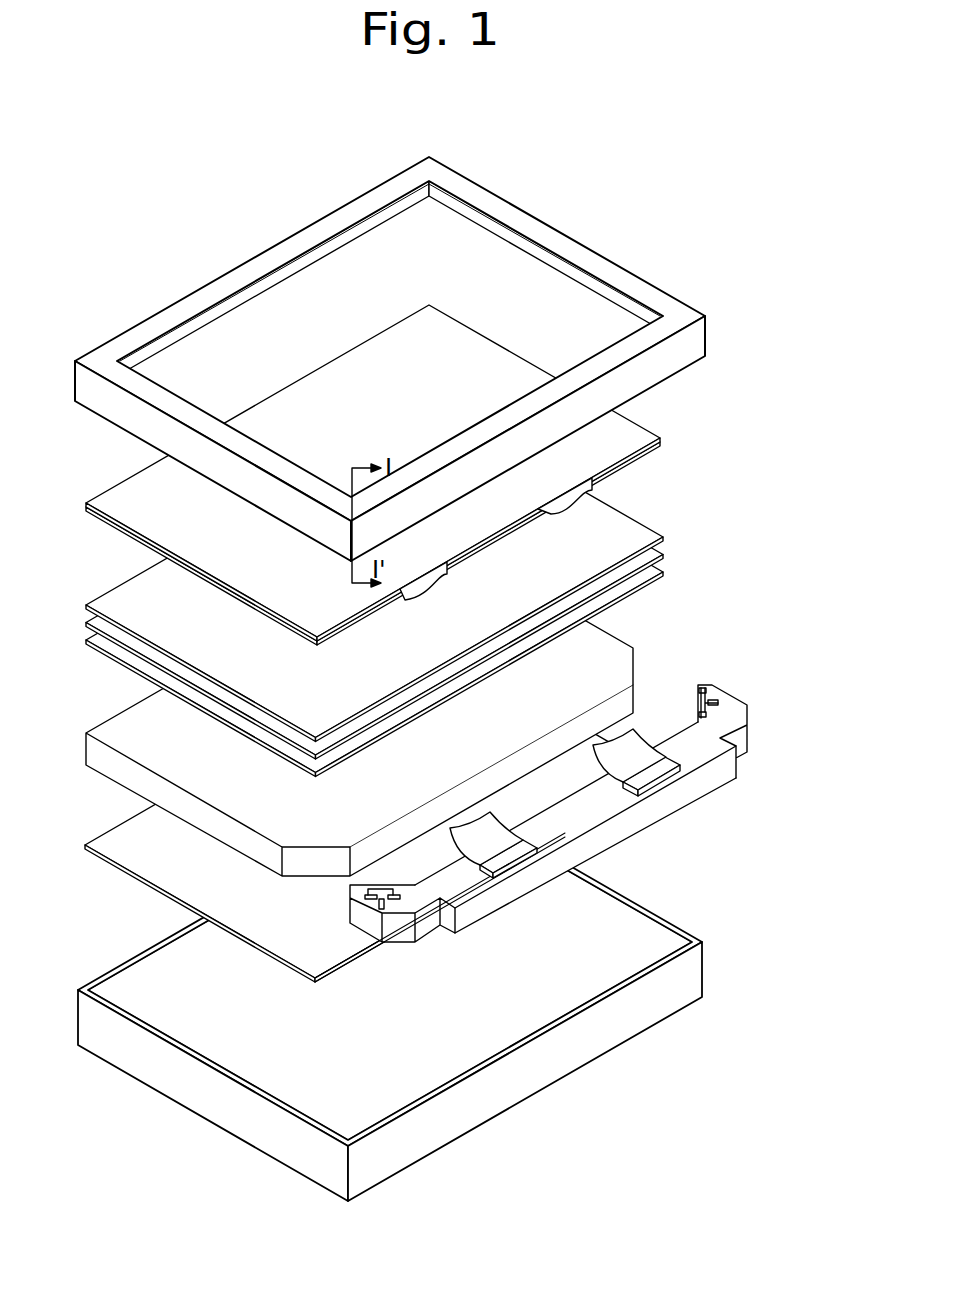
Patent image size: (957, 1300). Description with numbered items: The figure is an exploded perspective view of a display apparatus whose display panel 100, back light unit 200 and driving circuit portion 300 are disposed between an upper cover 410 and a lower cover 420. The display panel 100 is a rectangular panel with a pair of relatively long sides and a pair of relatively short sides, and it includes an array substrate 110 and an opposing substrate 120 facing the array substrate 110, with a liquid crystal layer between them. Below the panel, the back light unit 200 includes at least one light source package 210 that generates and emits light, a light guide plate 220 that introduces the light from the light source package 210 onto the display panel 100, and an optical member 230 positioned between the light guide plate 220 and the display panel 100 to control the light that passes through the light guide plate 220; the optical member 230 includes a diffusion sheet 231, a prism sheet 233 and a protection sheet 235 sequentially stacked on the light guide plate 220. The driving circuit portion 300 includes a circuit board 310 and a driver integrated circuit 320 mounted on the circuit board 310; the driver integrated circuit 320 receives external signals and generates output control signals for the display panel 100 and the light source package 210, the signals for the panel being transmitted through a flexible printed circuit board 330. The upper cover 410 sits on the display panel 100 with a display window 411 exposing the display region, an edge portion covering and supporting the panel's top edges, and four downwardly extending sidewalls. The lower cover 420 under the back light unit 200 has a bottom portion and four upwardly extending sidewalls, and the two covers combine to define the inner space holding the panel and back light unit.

The display panel 100 is at (442, 475).
The array substrate 110 is at (655, 441).
The opposing substrate 120 is at (628, 426).
The back light unit 200 is at (473, 694).
The light source package 210 is at (699, 684).
The light guide plate 220 is at (603, 665).
The optical member 230 is at (450, 591).
The diffusion sheet 231 is at (663, 573).
The prism sheet 233 is at (663, 555).
The protection sheet 235 is at (663, 538).
The driving circuit portion 300 is at (561, 818).
The circuit board 310 is at (578, 854).
The driver integrated circuit 320 is at (522, 850).
The flexible printed circuit board 330 is at (500, 838).
The upper cover 410 is at (390, 348).
The display window 411 is at (497, 253).
The lower cover 420 is at (708, 966).